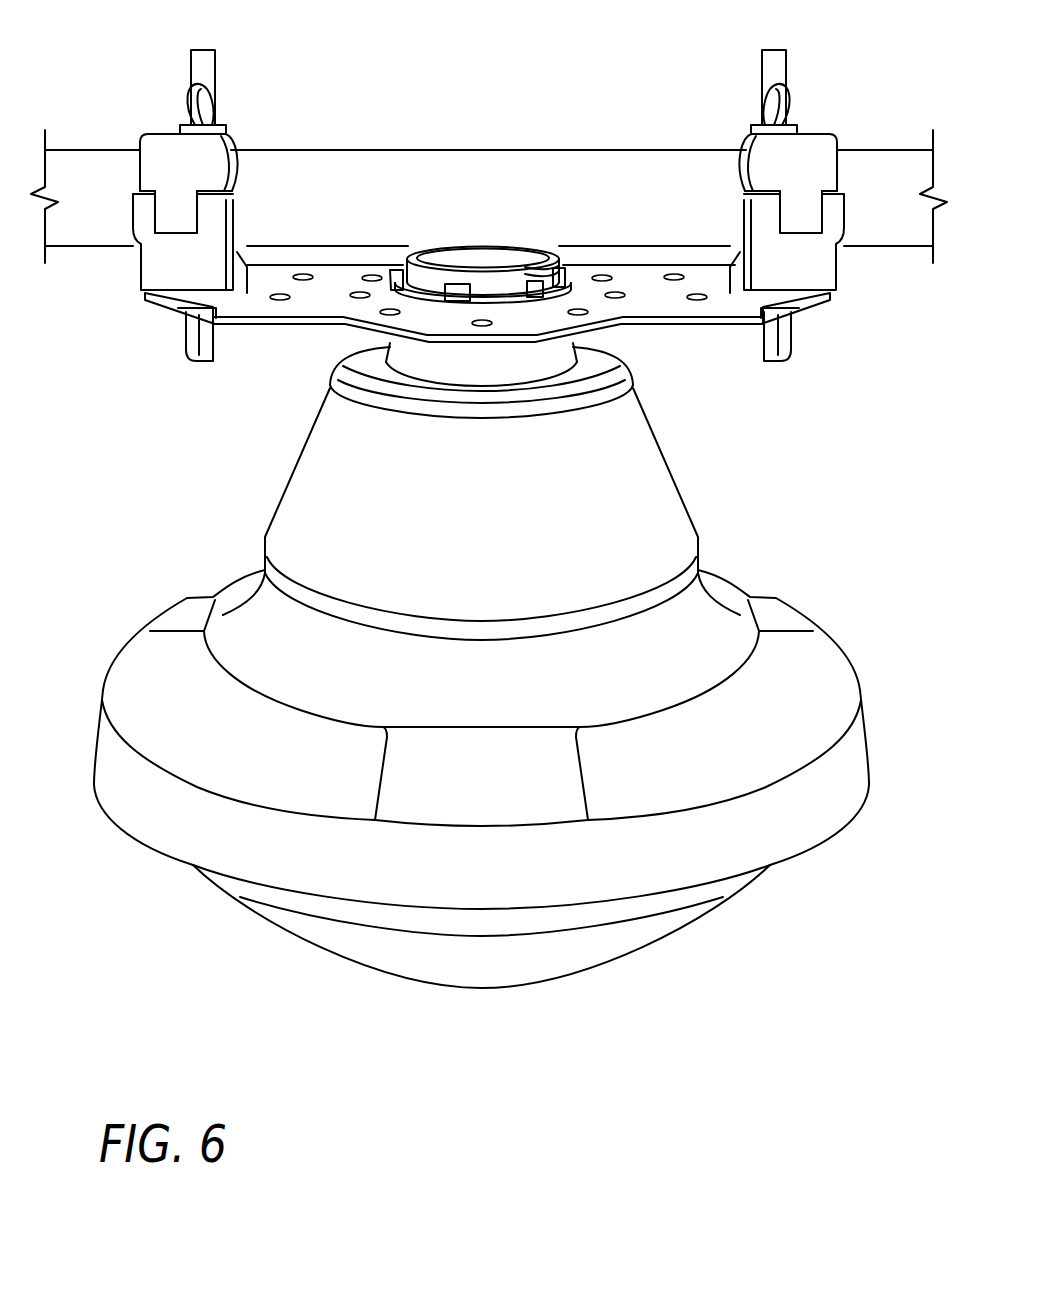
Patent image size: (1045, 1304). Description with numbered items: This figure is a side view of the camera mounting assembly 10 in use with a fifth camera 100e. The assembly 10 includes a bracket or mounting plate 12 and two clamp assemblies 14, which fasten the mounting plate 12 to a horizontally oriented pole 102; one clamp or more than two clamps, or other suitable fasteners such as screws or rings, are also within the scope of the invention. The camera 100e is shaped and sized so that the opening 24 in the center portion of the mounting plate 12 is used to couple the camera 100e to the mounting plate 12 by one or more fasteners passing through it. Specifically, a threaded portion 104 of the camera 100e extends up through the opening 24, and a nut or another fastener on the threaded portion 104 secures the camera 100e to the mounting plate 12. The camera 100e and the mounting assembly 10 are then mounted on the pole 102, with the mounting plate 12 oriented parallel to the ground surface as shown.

The camera mounting assembly 10 is at (489, 246).
The mounting plate 12 is at (250, 327).
The clamp assembly 14 is at (127, 119).
The opening 24 is at (391, 249).
The pole 102 is at (322, 160).
The threaded portion 104 is at (532, 257).
The fifth camera 100e is at (801, 923).